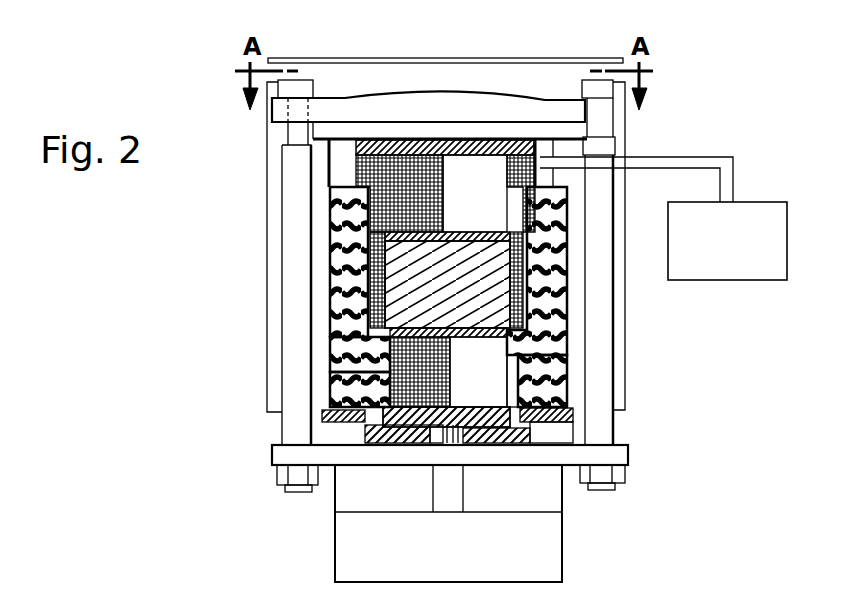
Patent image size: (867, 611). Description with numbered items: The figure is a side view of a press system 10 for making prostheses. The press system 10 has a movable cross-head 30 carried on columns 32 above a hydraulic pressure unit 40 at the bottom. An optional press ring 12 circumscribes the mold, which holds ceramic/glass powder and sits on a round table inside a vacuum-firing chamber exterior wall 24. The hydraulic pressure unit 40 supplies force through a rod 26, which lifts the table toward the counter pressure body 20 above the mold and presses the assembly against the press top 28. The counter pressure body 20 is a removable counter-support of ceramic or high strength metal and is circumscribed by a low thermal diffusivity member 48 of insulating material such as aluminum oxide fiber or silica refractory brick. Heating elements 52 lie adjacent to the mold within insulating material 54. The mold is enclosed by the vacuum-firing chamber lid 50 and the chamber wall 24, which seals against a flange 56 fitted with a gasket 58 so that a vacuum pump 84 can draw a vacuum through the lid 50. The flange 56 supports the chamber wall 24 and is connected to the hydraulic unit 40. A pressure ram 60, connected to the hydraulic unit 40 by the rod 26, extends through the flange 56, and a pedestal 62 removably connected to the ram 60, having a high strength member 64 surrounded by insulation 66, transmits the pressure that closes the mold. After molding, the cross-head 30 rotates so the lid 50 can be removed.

The press system 10 is at (188, 94).
The press ring 12 is at (330, 295).
The counter pressure body 20 is at (537, 176).
The vacuum-firing chamber exterior wall 24 is at (385, 284).
The rod 26 is at (463, 482).
The press top 28 is at (485, 138).
The movable cross-head 30 is at (452, 97).
The columns 32 is at (300, 172).
The hydraulic pressure unit 40 is at (525, 545).
The low thermal diffusivity member 48 is at (370, 177).
The vacuum-firing chamber lid 50 is at (340, 133).
The heating elements 52 is at (335, 243).
The insulating material 54 is at (330, 225).
The flange 56 is at (363, 432).
The gasket 58 is at (320, 418).
The pressure ram 60 is at (330, 390).
The pedestal 62 is at (518, 376).
The high strength member 64 is at (508, 345).
The insulation 66 is at (330, 340).
The vacuum pump 84 is at (725, 248).